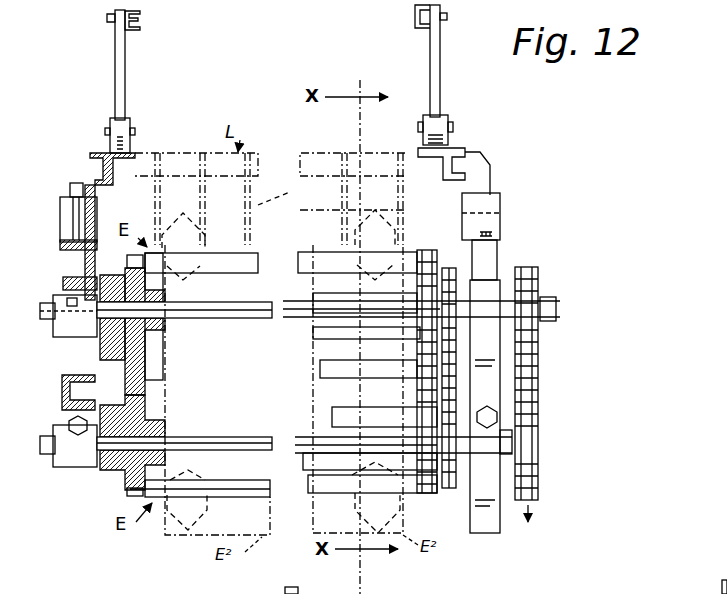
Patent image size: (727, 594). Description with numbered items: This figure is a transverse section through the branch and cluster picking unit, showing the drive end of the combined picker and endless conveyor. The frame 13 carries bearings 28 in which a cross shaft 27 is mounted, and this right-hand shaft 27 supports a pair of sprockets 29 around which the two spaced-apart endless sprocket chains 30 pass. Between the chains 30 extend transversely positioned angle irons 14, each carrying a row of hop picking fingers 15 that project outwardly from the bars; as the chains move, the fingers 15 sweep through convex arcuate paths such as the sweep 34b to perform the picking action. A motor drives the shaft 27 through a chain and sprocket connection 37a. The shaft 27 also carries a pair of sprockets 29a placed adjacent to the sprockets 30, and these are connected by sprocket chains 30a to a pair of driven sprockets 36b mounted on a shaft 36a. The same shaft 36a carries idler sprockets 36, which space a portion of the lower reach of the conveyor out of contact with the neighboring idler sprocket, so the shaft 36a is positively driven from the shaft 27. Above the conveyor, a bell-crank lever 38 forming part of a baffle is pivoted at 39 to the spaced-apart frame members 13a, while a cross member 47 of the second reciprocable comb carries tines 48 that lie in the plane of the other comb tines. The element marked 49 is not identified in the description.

The frame 13 is at (83, 263).
The frame members 13a is at (100, 166).
The angle irons 14 is at (219, 273).
The hop picking fingers 15 is at (281, 357).
The cross shafts 27 is at (234, 318).
The bearings 28 is at (55, 332).
The sprockets 29 is at (147, 340).
The sprockets 29a is at (105, 336).
The endless sprocket chains 30 is at (128, 257).
The sprocket chains 30a is at (105, 373).
The convex arcuate sweep 34b is at (289, 194).
The idler sprocket 36 is at (147, 418).
The shaft 36a is at (210, 437).
The driven sprockets 36b is at (105, 468).
The chain and sprocket connection 37a is at (539, 380).
The bell-crank lever 38 is at (125, 77).
The pivot 39 is at (105, 136).
The cross member 47 is at (195, 152).
The tines 48 is at (380, 168).
The bracket 49 is at (140, 22).